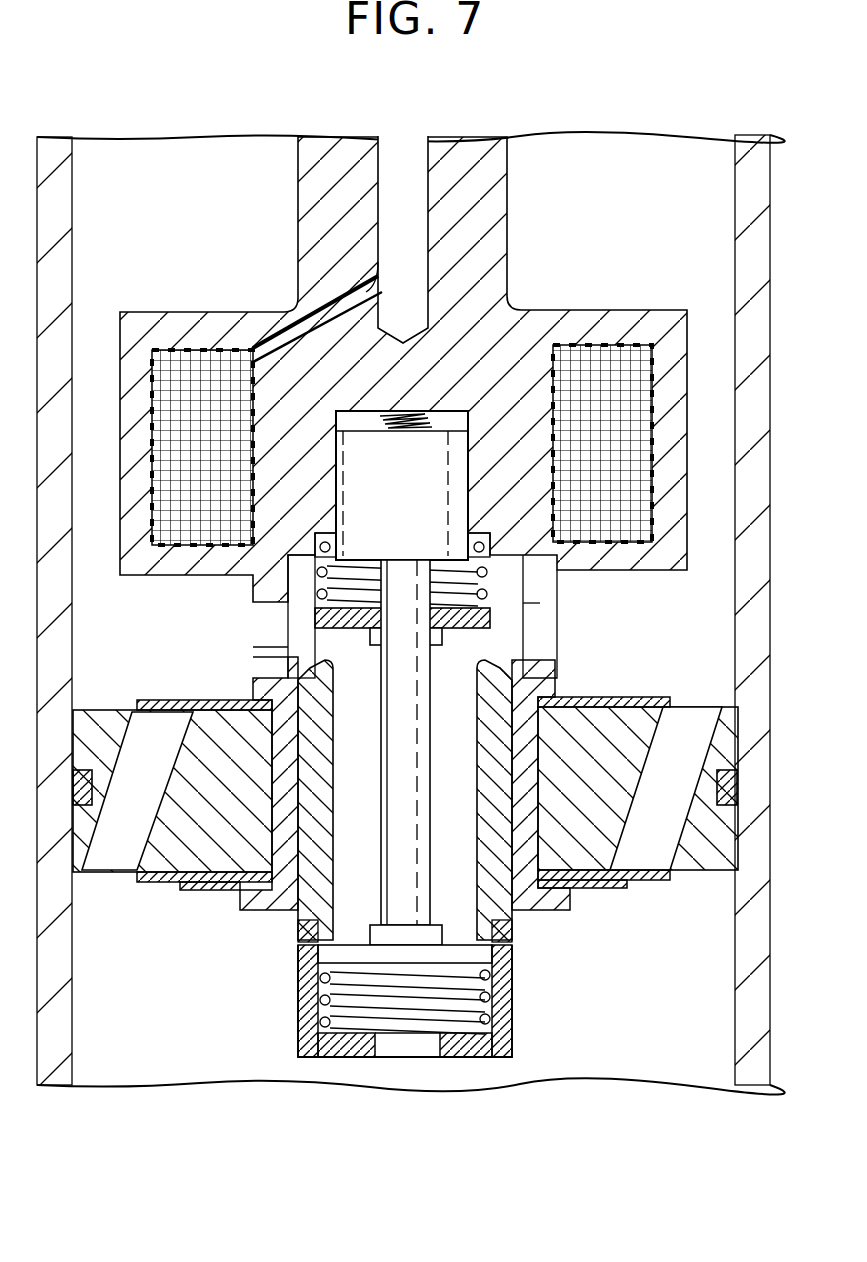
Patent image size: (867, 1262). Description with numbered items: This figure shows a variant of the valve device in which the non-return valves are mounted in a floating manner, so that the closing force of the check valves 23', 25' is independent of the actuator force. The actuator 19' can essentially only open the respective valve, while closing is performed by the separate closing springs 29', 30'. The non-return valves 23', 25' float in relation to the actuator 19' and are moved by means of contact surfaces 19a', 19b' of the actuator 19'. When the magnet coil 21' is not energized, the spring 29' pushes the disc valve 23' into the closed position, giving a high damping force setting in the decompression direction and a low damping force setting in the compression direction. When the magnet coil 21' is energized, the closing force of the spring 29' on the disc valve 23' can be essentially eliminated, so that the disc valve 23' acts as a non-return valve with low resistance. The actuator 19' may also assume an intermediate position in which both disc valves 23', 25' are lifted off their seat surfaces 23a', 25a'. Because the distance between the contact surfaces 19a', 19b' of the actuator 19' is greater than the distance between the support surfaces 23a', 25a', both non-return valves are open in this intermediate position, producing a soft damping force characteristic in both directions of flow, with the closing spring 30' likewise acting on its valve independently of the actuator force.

The actuator 19' is at (383, 742).
The contact surface of the actuator 19a' is at (316, 647).
The contact surface of the actuator 19b' is at (361, 987).
The magnet coil 21' is at (446, 445).
The disc valve 23' is at (342, 609).
The seat surface 23a' is at (446, 616).
The check valve 25' is at (439, 815).
The seat surface 25a' is at (356, 957).
The closing spring 29' is at (475, 589).
The closing spring 30' is at (461, 1019).